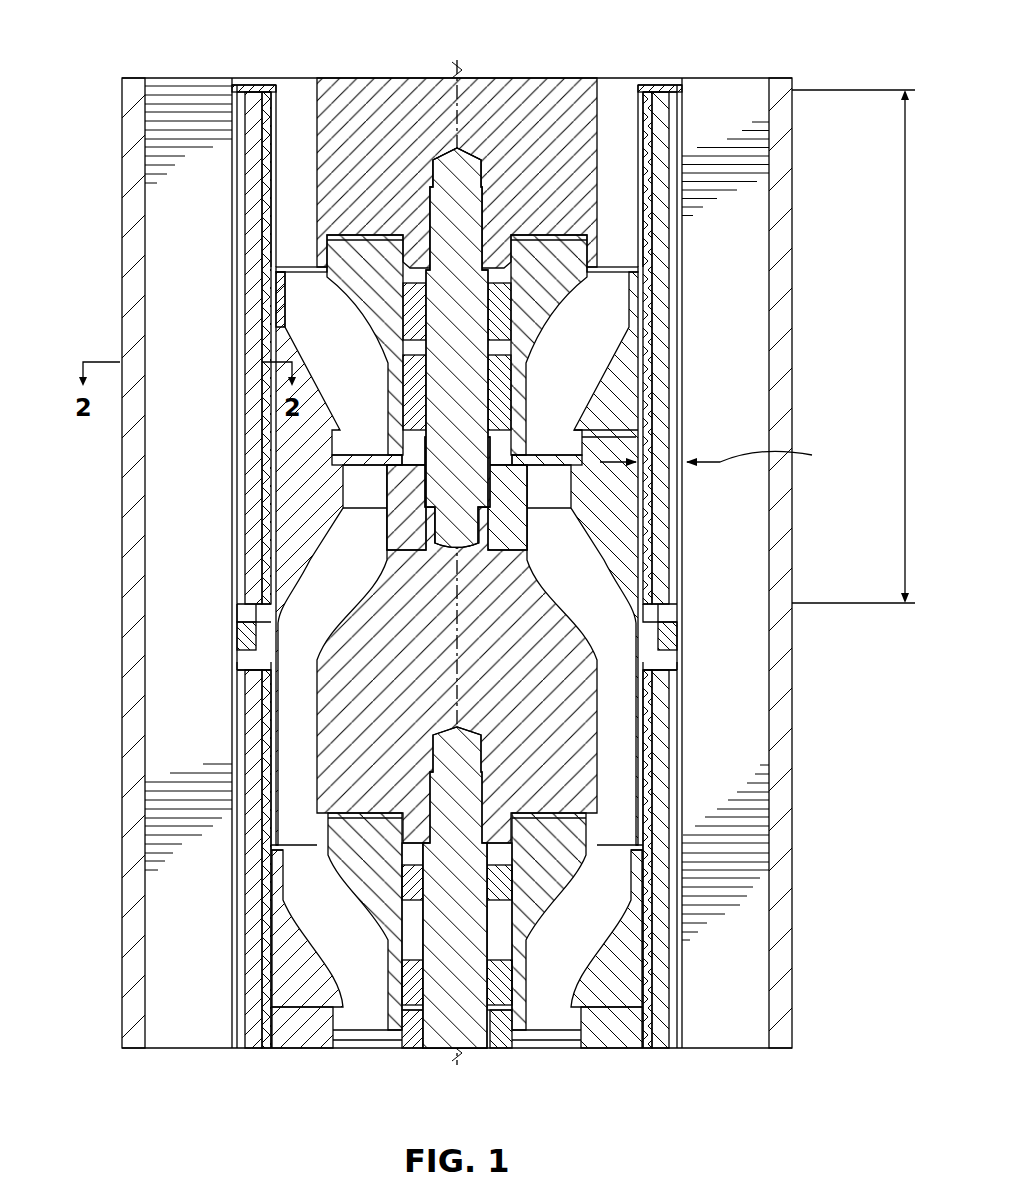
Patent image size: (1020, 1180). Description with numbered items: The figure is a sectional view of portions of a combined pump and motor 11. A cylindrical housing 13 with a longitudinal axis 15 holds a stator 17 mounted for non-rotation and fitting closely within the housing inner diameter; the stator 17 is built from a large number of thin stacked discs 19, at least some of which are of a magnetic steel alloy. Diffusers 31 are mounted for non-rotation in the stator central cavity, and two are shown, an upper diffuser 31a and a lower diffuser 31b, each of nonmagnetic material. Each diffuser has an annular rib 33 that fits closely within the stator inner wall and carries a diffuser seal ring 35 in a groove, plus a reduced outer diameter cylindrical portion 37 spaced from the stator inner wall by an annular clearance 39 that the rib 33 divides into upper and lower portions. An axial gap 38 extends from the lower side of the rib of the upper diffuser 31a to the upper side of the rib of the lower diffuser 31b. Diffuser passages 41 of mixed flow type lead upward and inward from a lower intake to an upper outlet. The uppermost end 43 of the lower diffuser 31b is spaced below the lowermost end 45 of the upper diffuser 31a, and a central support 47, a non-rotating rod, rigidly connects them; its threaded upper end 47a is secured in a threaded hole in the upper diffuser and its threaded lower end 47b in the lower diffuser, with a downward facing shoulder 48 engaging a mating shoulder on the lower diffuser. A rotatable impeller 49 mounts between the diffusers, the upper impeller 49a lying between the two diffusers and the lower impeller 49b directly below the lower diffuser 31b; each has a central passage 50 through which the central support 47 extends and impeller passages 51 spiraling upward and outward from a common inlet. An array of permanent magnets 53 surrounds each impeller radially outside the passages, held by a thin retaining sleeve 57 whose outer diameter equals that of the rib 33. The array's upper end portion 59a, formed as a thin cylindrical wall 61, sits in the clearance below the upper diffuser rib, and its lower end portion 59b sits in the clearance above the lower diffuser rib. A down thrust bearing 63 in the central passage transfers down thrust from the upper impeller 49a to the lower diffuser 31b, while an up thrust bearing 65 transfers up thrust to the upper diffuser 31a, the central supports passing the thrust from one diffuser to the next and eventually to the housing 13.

The combined pump and motor 11 is at (800, 325).
The cylindrical housing 13 is at (780, 385).
The longitudinal axis 15 is at (477, 1010).
The stator 17 is at (748, 265).
The stator discs 19 is at (750, 178).
The diffuser 31 is at (618, 534).
The upper diffuser 31a is at (362, 90).
The lower diffuser 31b is at (300, 512).
The rib 33 is at (680, 618).
The diffuser seal ring 35 is at (668, 640).
The reduced outer diameter cylindrical portion 37 is at (640, 433).
The axial gap 38 is at (904, 422).
The annular clearance 39 is at (720, 458).
The diffuser passages 41 is at (578, 571).
The uppermost end of lower diffuser 43 is at (650, 402).
The lowermost end of upper diffuser 45 is at (282, 292).
The central support 47 is at (490, 366).
The threaded upper end 47a is at (440, 215).
The threaded lower end 47b is at (440, 472).
The downward facing shoulder 48 is at (400, 458).
The impeller 49 is at (282, 345).
The upper impeller 49a is at (265, 308).
The lower impeller 49b is at (265, 972).
The central passage 50 is at (400, 898).
The impeller passages 51 is at (576, 953).
The permanent magnets 53 is at (660, 355).
The retaining sleeve 57 is at (672, 320).
The upper end portion of the array of magnets 59a is at (672, 97).
The lower end portion of the array of magnets 59b is at (672, 668).
The thin cylindrical wall 61 is at (633, 117).
The down thrust bearing 63 is at (403, 372).
The up thrust bearing 65 is at (403, 308).